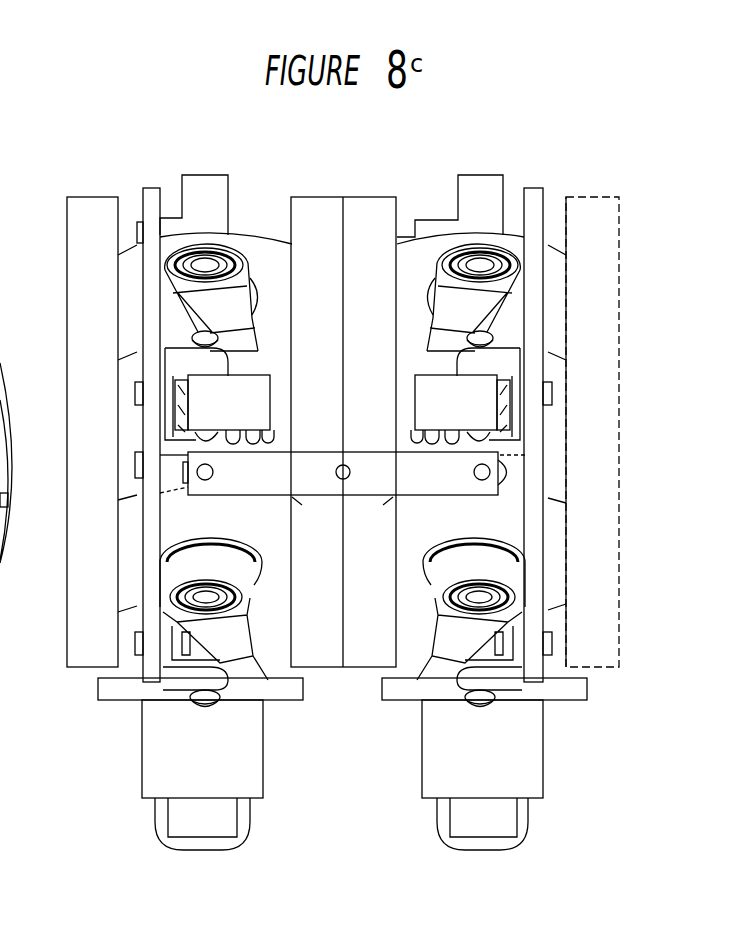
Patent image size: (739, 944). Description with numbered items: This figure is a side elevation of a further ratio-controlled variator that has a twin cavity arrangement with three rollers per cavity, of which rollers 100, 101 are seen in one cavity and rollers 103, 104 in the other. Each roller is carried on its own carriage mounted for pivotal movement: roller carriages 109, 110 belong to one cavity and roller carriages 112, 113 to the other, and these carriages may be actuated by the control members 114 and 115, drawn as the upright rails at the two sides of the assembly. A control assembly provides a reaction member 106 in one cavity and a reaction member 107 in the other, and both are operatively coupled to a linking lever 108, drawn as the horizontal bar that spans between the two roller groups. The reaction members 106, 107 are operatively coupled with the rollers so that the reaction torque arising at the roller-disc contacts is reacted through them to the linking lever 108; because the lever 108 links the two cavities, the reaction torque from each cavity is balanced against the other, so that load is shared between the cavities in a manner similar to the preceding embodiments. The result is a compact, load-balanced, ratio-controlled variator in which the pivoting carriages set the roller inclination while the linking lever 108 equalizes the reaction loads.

The roller 100 is at (480, 267).
The roller 101 is at (474, 553).
The roller 103 is at (210, 267).
The roller 104 is at (210, 553).
The reaction member 106 is at (500, 472).
The reaction member 107 is at (183, 470).
The linking lever 108 is at (342, 473).
The roller carriage 109 is at (471, 622).
The roller carriage 110 is at (465, 344).
The roller carriage 112 is at (219, 344).
The roller carriage 113 is at (214, 622).
The control member 114 is at (535, 197).
The control member 115 is at (152, 208).